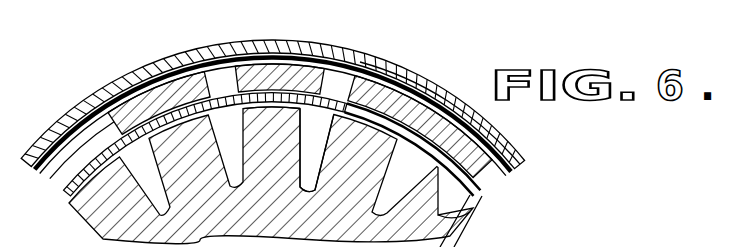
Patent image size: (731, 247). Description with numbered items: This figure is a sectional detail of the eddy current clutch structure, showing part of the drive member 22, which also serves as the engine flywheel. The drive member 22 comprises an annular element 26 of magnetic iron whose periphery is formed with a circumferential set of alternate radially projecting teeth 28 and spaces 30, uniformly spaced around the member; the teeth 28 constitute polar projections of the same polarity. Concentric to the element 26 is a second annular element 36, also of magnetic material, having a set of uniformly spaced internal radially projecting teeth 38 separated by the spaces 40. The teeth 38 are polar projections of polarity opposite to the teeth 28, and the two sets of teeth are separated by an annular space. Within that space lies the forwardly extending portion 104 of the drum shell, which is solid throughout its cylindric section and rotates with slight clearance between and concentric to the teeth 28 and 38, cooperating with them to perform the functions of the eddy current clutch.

The forwardly extending portion of the shell 104 is at (386, 64).
The spaces 40 is at (115, 105).
The internal radially projecting teeth 38 is at (166, 90).
The second annular element 36 is at (333, 80).
The radially projecting teeth 28 is at (93, 217).
The spaces 30 is at (138, 168).
The annular element 26 is at (263, 197).
The drive member 22 is at (445, 218).